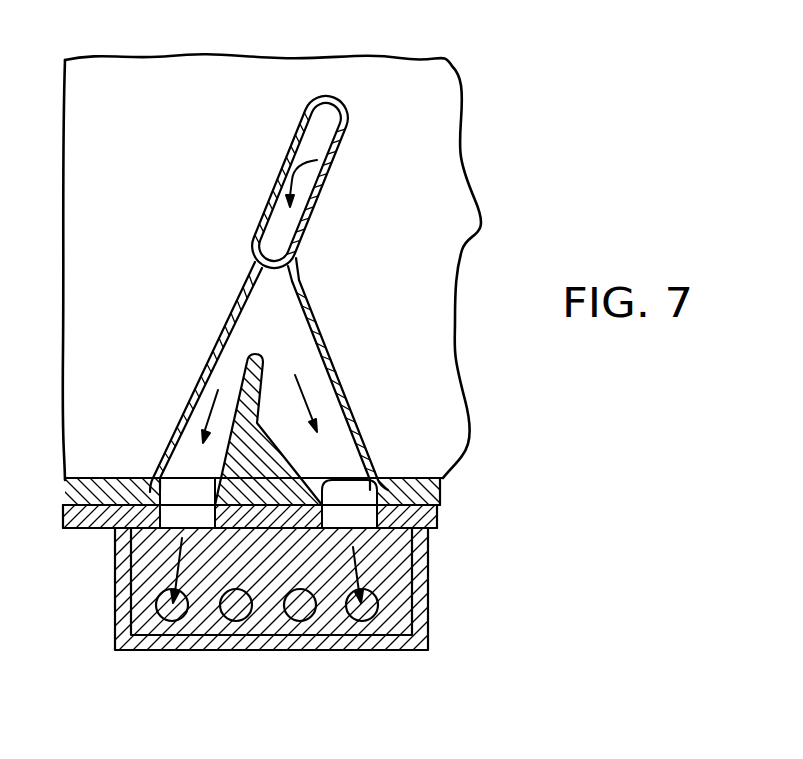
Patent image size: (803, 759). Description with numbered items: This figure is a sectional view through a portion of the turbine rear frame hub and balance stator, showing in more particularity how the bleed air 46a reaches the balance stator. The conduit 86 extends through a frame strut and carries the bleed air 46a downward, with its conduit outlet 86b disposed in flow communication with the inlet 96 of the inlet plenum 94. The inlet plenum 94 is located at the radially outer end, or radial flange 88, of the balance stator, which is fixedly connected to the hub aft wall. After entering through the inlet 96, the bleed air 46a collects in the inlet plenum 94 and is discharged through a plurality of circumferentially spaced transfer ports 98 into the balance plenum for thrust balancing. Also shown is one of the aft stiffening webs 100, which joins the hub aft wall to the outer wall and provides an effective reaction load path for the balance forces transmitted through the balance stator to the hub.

The bleed air 46a is at (290, 183).
The conduit 86 is at (337, 180).
The conduit outlet 86b is at (180, 492).
The radial flange 88 is at (425, 532).
The inlet plenum 94 is at (420, 607).
The inlet 96 is at (205, 515).
The transfer ports 98 is at (250, 590).
The aft stiffening webs 100 is at (268, 368).